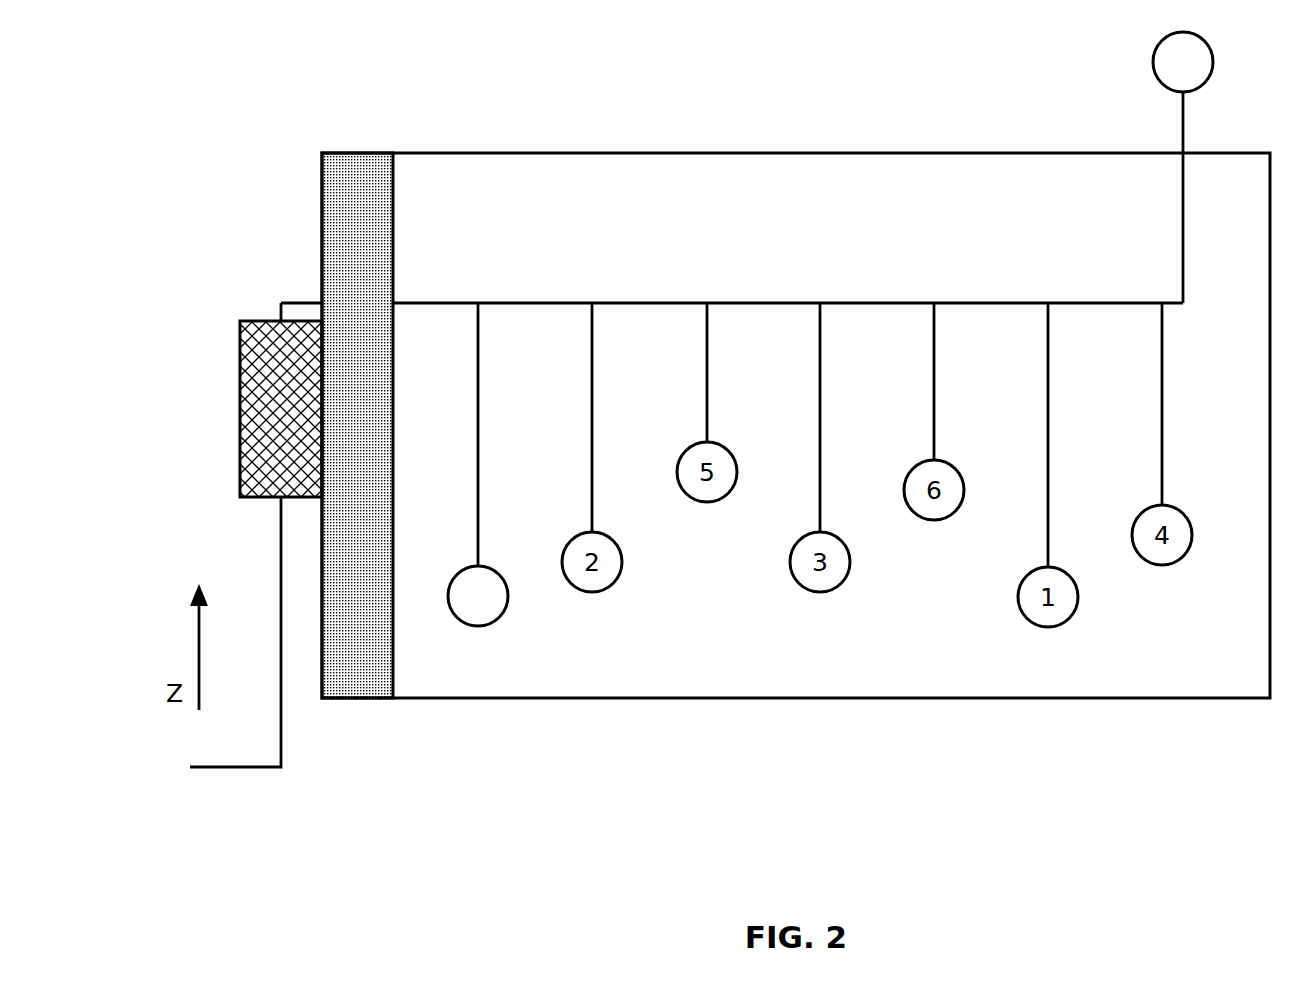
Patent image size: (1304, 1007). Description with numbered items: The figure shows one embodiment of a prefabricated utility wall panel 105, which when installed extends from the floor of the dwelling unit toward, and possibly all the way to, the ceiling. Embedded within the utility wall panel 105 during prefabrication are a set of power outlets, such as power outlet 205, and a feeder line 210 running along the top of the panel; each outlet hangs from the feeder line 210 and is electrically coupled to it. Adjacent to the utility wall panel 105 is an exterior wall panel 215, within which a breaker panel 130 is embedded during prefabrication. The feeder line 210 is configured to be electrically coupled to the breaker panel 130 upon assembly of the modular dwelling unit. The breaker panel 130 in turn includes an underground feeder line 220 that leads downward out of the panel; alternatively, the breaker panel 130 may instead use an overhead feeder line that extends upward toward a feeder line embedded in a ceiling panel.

The prefabricated utility wall panel 105 is at (818, 223).
The exterior wall panel 215 is at (381, 223).
The breaker panel 130 is at (258, 416).
The power outlet 205 is at (478, 627).
The feeder line 210 is at (989, 300).
The underground feeder line 220 is at (252, 768).